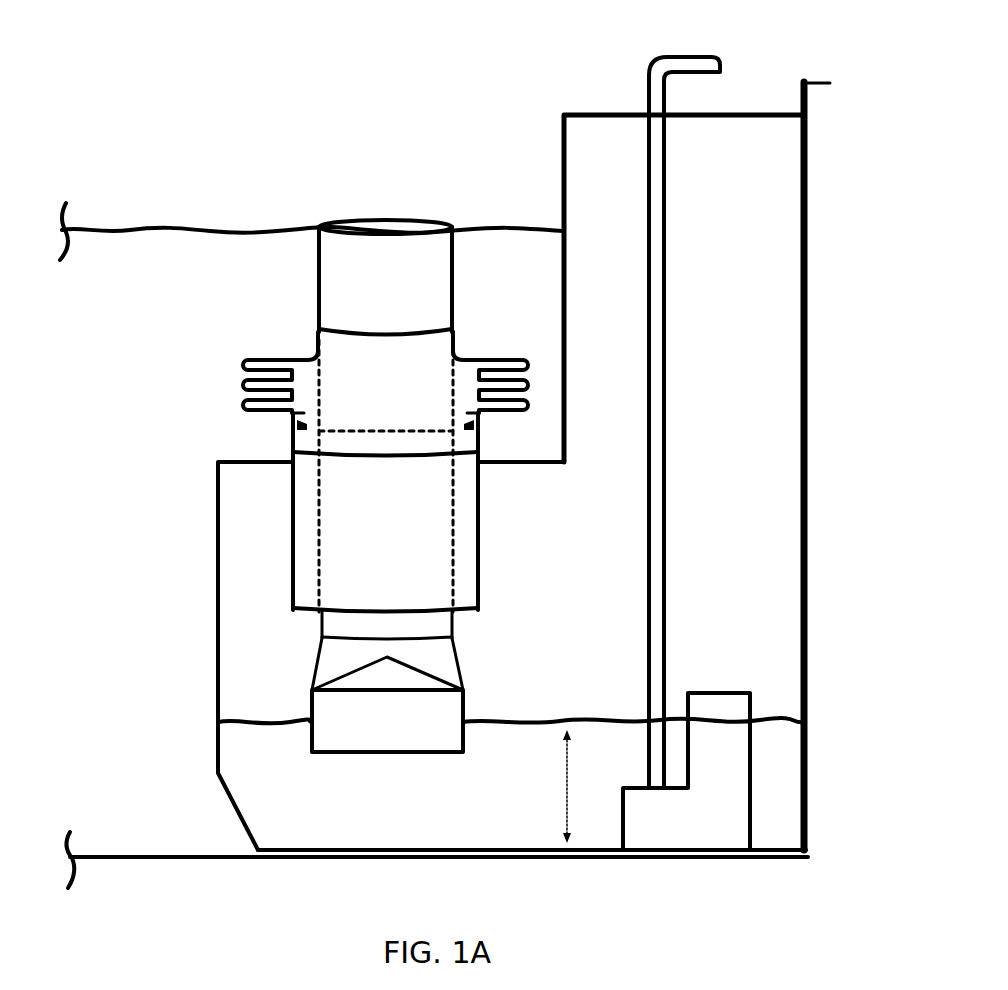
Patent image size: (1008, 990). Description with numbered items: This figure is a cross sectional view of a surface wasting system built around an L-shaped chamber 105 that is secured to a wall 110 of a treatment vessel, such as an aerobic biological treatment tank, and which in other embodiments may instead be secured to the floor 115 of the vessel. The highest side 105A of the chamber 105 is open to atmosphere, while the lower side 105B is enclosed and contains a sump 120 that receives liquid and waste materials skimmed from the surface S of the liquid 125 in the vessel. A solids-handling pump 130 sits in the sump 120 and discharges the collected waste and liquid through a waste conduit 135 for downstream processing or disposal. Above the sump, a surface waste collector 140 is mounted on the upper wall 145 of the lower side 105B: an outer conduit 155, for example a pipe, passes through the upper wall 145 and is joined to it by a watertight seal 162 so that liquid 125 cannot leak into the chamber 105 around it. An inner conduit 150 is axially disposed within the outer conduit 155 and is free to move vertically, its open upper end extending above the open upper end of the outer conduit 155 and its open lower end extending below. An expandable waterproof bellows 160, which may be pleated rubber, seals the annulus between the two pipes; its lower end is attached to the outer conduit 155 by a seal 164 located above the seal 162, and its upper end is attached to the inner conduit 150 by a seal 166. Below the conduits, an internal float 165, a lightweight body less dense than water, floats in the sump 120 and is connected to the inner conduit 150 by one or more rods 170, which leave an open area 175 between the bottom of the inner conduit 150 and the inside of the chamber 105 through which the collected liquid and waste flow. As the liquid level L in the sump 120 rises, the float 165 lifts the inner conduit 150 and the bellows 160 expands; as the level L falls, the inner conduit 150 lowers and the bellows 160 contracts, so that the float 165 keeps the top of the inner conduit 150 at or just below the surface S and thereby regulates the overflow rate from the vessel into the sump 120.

The L-shaped chamber 105 is at (745, 461).
The highest side of the chamber 105A is at (748, 248).
The lower side of the chamber 105B is at (281, 535).
The wall 110 is at (808, 224).
The floor 115 is at (270, 860).
The sump 120 is at (465, 800).
The liquid 125 is at (127, 510).
The solids-handling pump 130 is at (713, 825).
The waste conduit 135 is at (649, 87).
The surface waste collector 140 is at (193, 347).
The upper wall 145 is at (220, 461).
The inner conduit 150 is at (398, 288).
The outer conduit 155 is at (462, 498).
The expandable waterproof bellows 160 is at (306, 370).
The seal 162 is at (482, 466).
The seal 164 is at (292, 455).
The internal float 165 is at (403, 713).
The seal 166 is at (453, 331).
The rods 170 is at (312, 668).
The open area 175 is at (345, 659).
The surface S is at (142, 229).
The liquid level L is at (559, 786).